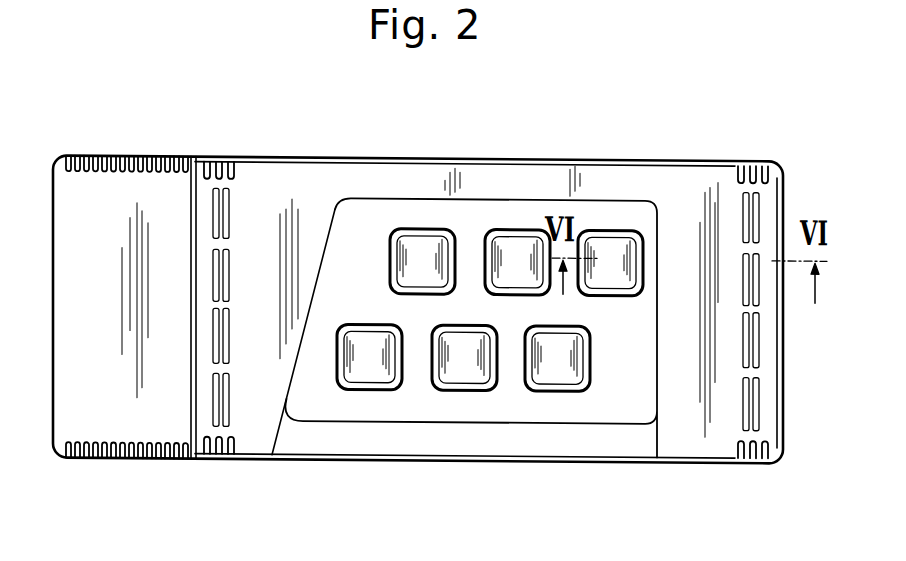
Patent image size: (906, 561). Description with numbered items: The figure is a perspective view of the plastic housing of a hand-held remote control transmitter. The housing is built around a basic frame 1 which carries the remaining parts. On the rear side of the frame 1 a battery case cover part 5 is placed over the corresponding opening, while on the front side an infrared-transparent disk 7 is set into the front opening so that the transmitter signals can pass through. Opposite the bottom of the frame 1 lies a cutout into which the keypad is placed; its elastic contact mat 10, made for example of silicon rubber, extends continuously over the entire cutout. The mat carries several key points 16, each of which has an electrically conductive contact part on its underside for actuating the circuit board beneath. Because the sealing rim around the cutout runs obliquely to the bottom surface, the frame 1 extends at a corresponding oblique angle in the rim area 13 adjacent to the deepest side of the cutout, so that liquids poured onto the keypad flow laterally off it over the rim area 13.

The basic frame 1 is at (703, 178).
The battery case cover part 5 is at (117, 205).
The infrared-transparent disk 7 is at (784, 312).
The elastic contact mat 10 is at (637, 400).
The rim area 13 is at (437, 440).
The key point 16 is at (403, 240).